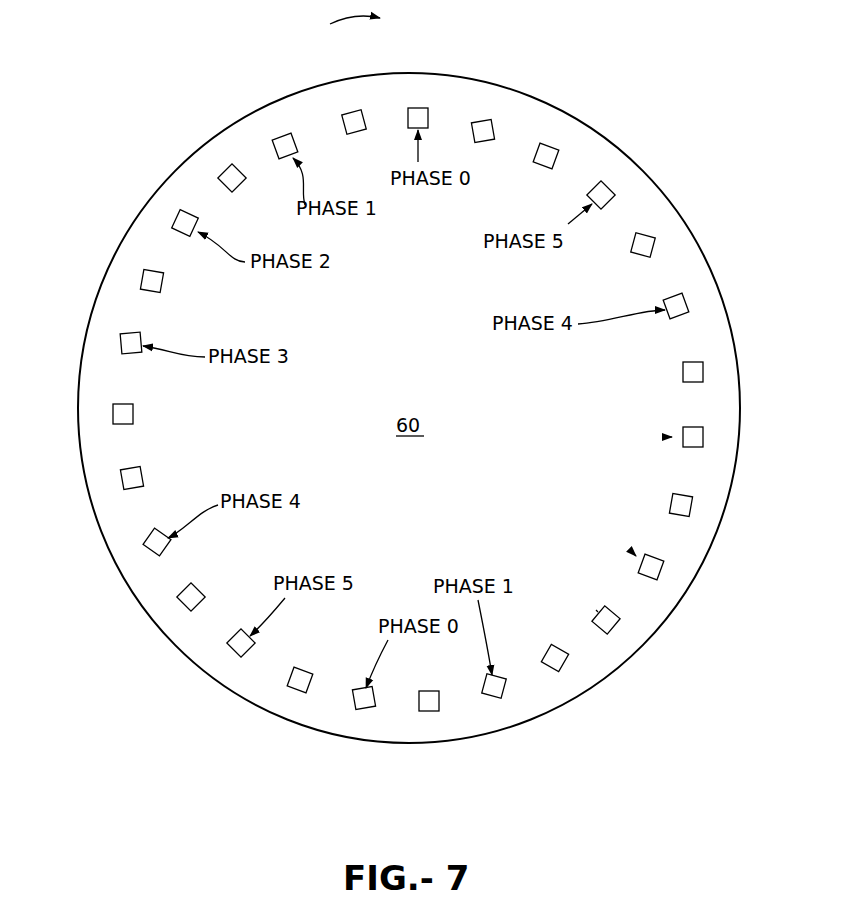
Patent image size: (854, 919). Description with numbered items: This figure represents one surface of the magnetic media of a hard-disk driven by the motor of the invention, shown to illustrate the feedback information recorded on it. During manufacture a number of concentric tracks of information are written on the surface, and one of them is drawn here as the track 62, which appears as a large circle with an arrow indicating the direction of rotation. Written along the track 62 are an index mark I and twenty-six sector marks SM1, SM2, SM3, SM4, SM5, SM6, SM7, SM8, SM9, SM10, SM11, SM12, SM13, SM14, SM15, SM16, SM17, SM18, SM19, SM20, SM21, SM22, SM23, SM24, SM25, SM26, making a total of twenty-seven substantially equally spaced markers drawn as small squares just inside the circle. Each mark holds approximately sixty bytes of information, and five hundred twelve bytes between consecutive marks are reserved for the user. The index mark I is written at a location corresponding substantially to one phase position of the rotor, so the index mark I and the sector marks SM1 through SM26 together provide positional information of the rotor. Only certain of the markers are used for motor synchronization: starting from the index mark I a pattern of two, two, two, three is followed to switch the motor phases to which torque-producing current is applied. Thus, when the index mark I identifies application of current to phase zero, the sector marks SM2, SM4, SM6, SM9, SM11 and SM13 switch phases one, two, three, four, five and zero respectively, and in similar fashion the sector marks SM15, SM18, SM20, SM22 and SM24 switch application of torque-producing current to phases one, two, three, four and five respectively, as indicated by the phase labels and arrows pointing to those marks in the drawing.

The track 62 is at (582, 634).
The index mark I is at (420, 108).
The sector mark SM1 is at (352, 112).
The sector mark SM2 is at (283, 136).
The sector mark SM3 is at (225, 170).
The sector mark SM4 is at (176, 218).
The sector mark SM5 is at (143, 275).
The sector mark SM6 is at (121, 340).
The sector mark SM7 is at (113, 414).
The sector mark SM8 is at (122, 480).
The sector mark SM9 is at (147, 546).
The sector mark SM10 is at (183, 604).
The sector mark SM11 is at (233, 650).
The sector mark SM12 is at (292, 690).
The sector mark SM13 is at (360, 706).
The sector mark SM14 is at (432, 711).
The sector mark SM15 is at (500, 695).
The sector mark SM16 is at (565, 667).
The sector mark SM17 is at (617, 620).
The sector mark SM18 is at (661, 566).
The sector mark SM19 is at (693, 503).
The sector mark SM20 is at (703, 437).
The sector mark SM21 is at (703, 372).
The sector mark SM22 is at (686, 306).
The sector mark SM23 is at (655, 240).
The sector mark SM24 is at (610, 188).
The sector mark SM25 is at (552, 146).
The sector mark SM26 is at (487, 121).